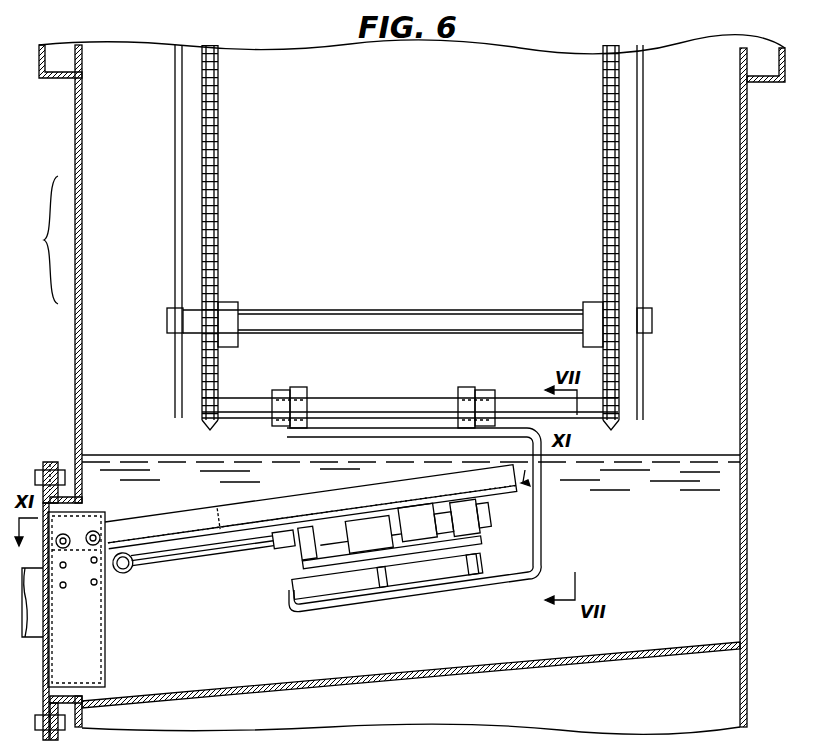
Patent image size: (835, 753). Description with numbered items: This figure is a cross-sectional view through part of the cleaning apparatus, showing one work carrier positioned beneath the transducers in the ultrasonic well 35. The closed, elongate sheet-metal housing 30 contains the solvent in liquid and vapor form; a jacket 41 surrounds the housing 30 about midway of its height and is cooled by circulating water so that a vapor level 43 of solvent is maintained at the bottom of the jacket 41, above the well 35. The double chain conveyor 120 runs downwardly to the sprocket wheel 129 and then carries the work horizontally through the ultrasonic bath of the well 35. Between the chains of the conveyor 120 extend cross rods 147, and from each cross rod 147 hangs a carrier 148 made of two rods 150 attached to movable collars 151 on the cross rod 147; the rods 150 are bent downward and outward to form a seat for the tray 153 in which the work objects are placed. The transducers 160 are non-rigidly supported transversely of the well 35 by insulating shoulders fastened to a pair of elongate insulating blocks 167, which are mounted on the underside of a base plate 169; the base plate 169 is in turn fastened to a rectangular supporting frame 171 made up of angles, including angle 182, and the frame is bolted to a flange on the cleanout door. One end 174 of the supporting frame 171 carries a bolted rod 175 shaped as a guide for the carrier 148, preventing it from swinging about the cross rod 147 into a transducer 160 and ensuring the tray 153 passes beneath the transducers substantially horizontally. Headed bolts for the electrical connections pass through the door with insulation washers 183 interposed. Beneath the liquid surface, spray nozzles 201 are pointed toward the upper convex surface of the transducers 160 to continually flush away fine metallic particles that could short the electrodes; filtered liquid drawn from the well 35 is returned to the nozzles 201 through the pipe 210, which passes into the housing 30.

The housing 30 is at (36, 240).
The well 35 is at (411, 509).
The jacket 41 is at (47, 74).
The vapor level 43 is at (83, 76).
The conveyor 120 is at (219, 128).
The sprocket wheel 129 is at (206, 430).
The cross rod 147 is at (375, 406).
The carrier 148 is at (468, 598).
The rod 150 is at (392, 432).
The collar 151 is at (293, 387).
The tray 153 is at (340, 587).
The transducer 160 is at (400, 556).
The insulating block 167 is at (415, 517).
The base plate 169 is at (290, 505).
The supporting frame 171 is at (228, 498).
The end of supporting frame 174 is at (466, 512).
The rod 175 is at (542, 516).
The angle 182 is at (126, 520).
The insulation washer 183 is at (100, 613).
The spray nozzle 201 is at (290, 548).
The pipe 210 is at (130, 570).